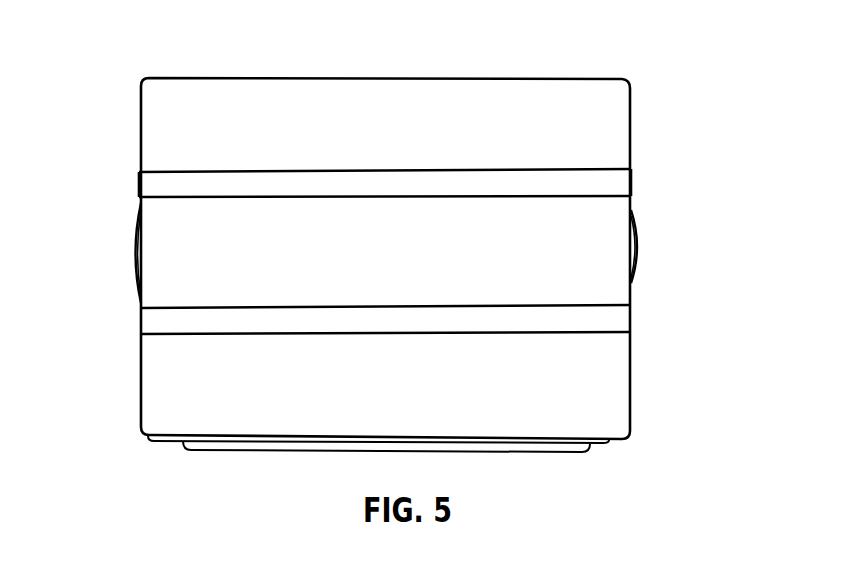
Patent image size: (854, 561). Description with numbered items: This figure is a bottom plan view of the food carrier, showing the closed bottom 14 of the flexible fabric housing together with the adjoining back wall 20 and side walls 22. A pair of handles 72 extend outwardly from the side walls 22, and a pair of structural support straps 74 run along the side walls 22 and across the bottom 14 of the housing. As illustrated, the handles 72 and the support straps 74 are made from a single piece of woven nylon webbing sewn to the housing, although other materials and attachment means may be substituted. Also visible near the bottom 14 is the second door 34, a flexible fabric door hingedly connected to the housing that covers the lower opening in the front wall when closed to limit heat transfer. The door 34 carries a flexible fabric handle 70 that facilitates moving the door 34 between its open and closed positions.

The back wall 20 is at (450, 79).
The side walls 22 is at (631, 124).
The handles 72 is at (134, 250).
The structural support straps 74 is at (620, 316).
The closed bottom 14 is at (610, 377).
The second door 34 is at (172, 445).
The flexible fabric handle 70 is at (560, 452).